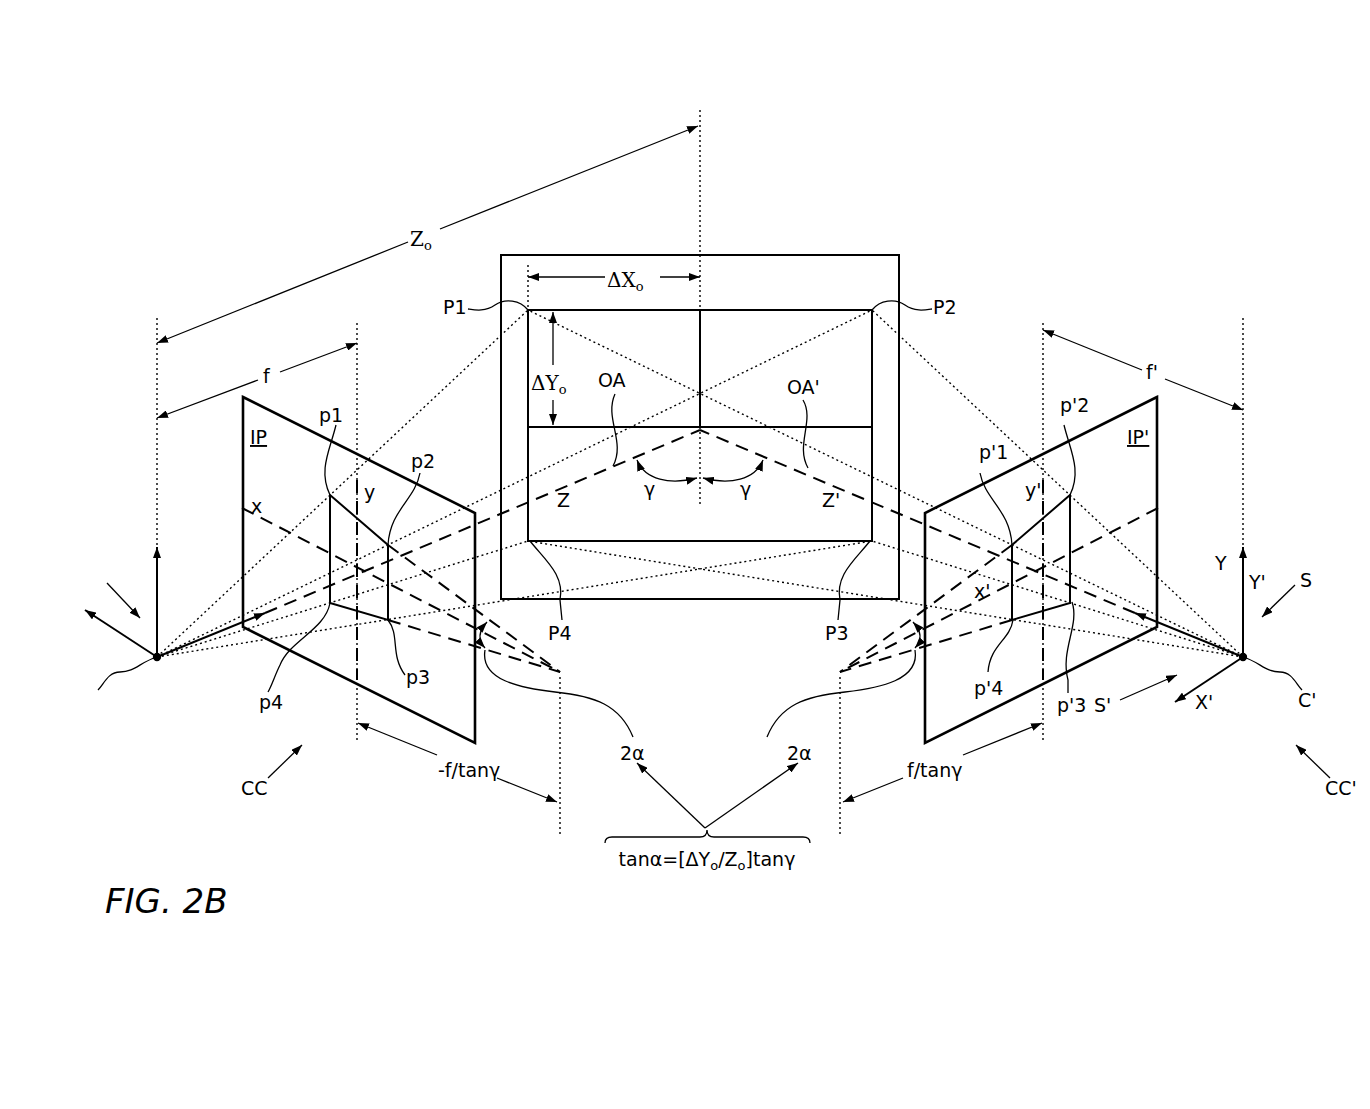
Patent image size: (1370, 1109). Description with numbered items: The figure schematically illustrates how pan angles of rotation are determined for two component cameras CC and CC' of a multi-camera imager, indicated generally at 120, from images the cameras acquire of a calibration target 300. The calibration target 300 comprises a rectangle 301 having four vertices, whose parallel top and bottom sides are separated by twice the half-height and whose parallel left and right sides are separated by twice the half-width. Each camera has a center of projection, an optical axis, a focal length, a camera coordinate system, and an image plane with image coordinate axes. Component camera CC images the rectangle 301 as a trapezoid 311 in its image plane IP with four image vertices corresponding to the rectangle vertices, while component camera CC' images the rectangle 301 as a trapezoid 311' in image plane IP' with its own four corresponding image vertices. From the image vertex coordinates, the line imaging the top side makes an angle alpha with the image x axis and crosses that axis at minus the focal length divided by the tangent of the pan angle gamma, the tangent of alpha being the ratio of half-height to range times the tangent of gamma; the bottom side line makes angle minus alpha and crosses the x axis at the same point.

The stereo imaging arrangement 120 is at (207, 260).
The calibration target 300 is at (757, 255).
The rectangle 301 is at (887, 358).
The trapezoid 311 is at (356, 669).
The trapezoid 311' is at (1046, 669).